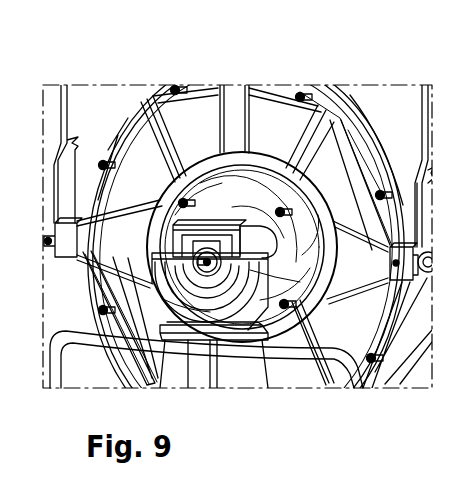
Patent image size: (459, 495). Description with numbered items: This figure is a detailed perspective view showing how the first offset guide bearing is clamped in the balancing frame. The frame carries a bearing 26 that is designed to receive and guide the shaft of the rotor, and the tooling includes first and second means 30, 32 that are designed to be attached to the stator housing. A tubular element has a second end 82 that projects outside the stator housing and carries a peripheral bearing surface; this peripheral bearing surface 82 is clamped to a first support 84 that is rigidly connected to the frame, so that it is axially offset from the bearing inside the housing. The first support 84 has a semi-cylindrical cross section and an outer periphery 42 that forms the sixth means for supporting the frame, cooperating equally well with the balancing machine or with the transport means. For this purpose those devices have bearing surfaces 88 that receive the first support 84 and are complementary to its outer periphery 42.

The second end 82 is at (206, 250).
The first means 30 is at (334, 176).
The bearing 26 is at (156, 291).
The bearing surfaces 88 is at (182, 292).
The first support 84 is at (198, 290).
The outer periphery 42 is at (218, 297).
The second means 32 is at (287, 372).